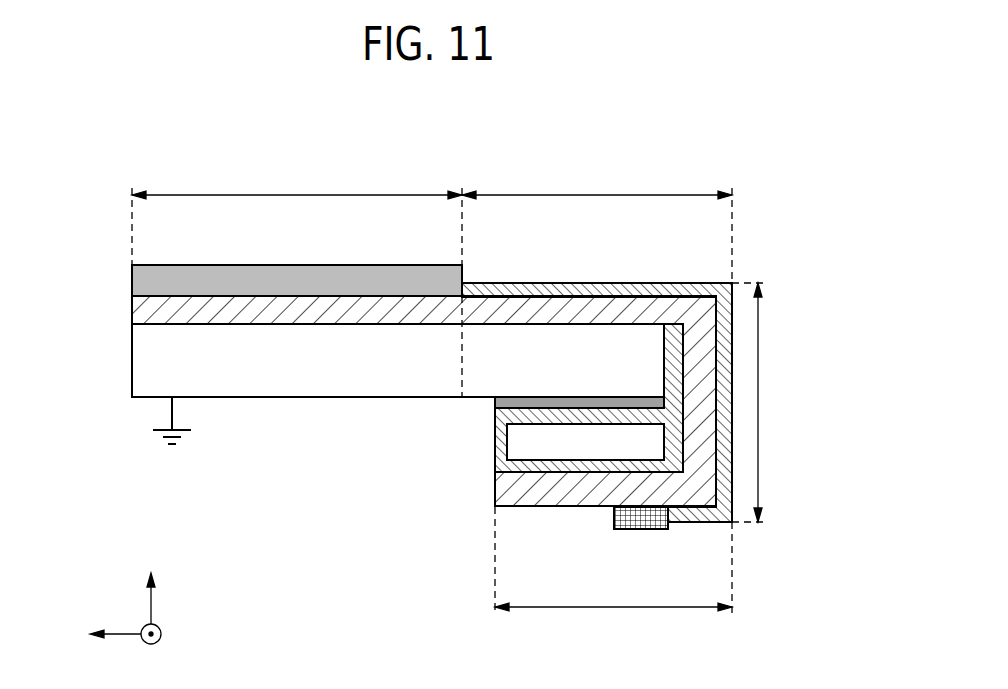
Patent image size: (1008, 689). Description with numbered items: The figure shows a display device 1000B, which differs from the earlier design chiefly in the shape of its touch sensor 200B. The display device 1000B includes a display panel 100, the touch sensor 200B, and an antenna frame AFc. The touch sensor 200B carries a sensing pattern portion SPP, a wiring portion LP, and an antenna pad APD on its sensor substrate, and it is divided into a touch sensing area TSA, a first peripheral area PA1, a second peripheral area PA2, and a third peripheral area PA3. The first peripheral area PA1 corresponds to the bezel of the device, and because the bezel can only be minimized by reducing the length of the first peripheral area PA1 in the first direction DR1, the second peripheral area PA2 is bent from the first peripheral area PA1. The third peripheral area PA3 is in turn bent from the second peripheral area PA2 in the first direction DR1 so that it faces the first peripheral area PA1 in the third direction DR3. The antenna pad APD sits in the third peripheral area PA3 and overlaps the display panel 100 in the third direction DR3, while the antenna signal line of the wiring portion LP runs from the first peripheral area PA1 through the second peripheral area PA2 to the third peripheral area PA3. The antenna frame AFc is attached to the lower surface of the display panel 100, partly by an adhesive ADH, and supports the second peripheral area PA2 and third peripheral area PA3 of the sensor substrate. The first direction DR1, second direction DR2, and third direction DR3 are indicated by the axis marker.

The display device 1000B is at (448, 160).
The touch sensor 200B is at (830, 535).
The display panel 100 is at (132, 360).
The sensing pattern portion SPP is at (132, 278).
The wiring portion LP is at (645, 283).
The adhesive ADH is at (495, 402).
The antenna frame AFc is at (495, 452).
The antenna pad APD is at (640, 529).
The touch sensing area TSA is at (297, 179).
The first peripheral area PA1 is at (597, 179).
The second peripheral area PA2 is at (776, 402).
The third peripheral area PA3 is at (613, 621).
The first direction DR1 is at (96, 636).
The second direction DR2 is at (173, 636).
The third direction DR3 is at (153, 583).